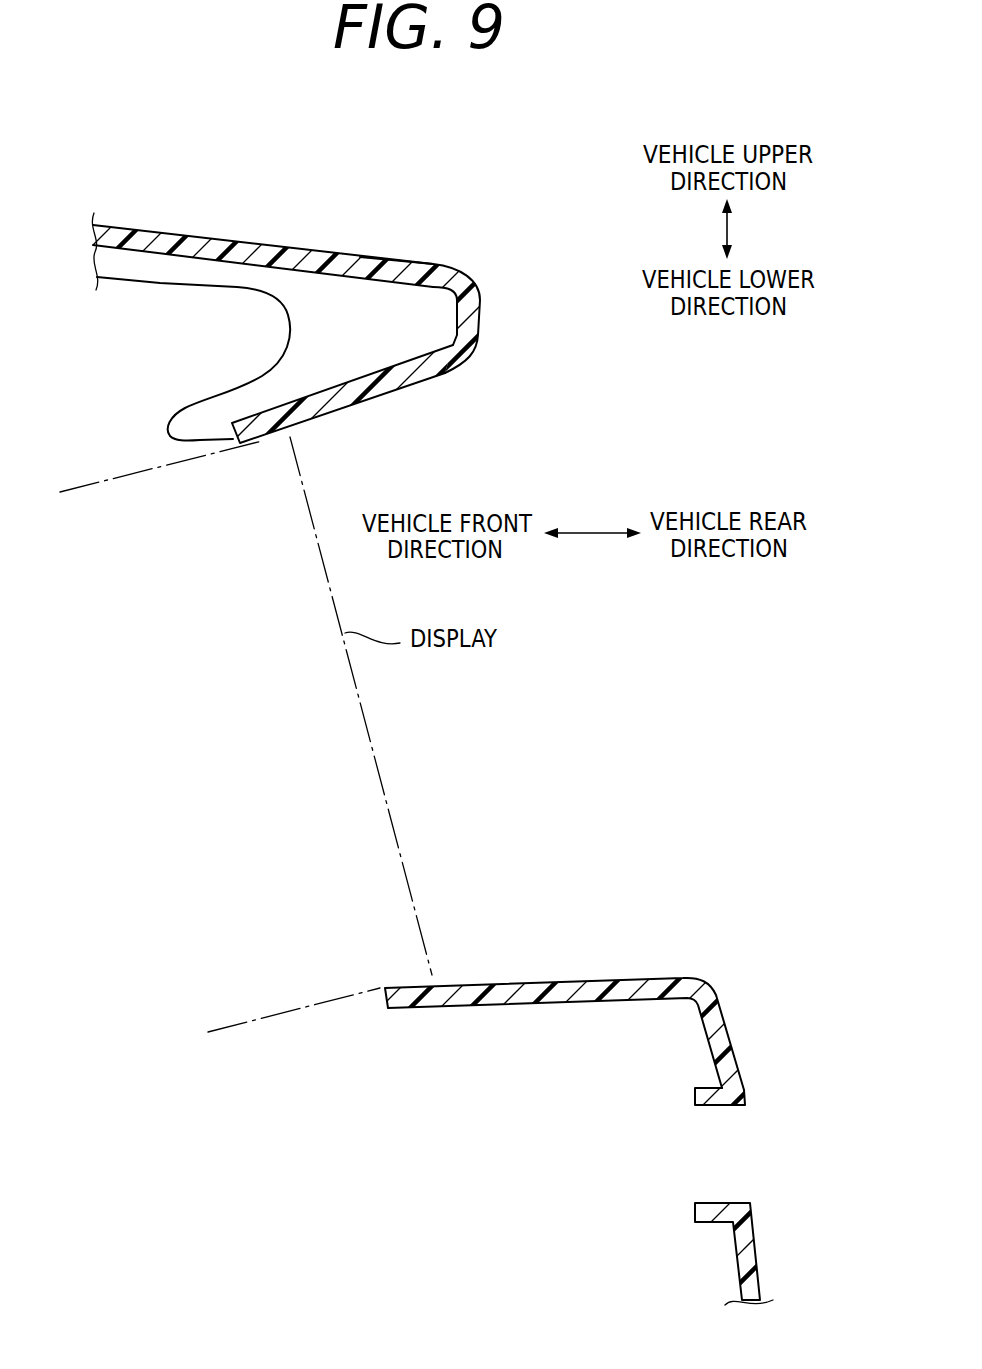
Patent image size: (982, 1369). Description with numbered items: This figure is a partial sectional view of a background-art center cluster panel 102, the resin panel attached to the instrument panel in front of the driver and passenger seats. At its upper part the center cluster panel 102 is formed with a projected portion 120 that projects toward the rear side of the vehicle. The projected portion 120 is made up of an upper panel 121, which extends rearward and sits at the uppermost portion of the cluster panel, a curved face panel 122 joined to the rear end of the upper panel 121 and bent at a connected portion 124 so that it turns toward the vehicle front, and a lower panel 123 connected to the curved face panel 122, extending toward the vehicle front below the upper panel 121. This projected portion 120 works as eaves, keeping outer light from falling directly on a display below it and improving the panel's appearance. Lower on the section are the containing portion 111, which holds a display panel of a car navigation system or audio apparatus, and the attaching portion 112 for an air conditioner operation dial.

The center cluster panel 102 is at (102, 198).
The projected portion 120 is at (326, 306).
The upper panel 121 is at (238, 241).
The curved face panel 122 is at (482, 327).
The lower panel 123 is at (365, 404).
The connected portion 124 is at (382, 253).
The containing portion 111 is at (391, 986).
The attaching portion 112 is at (722, 1105).